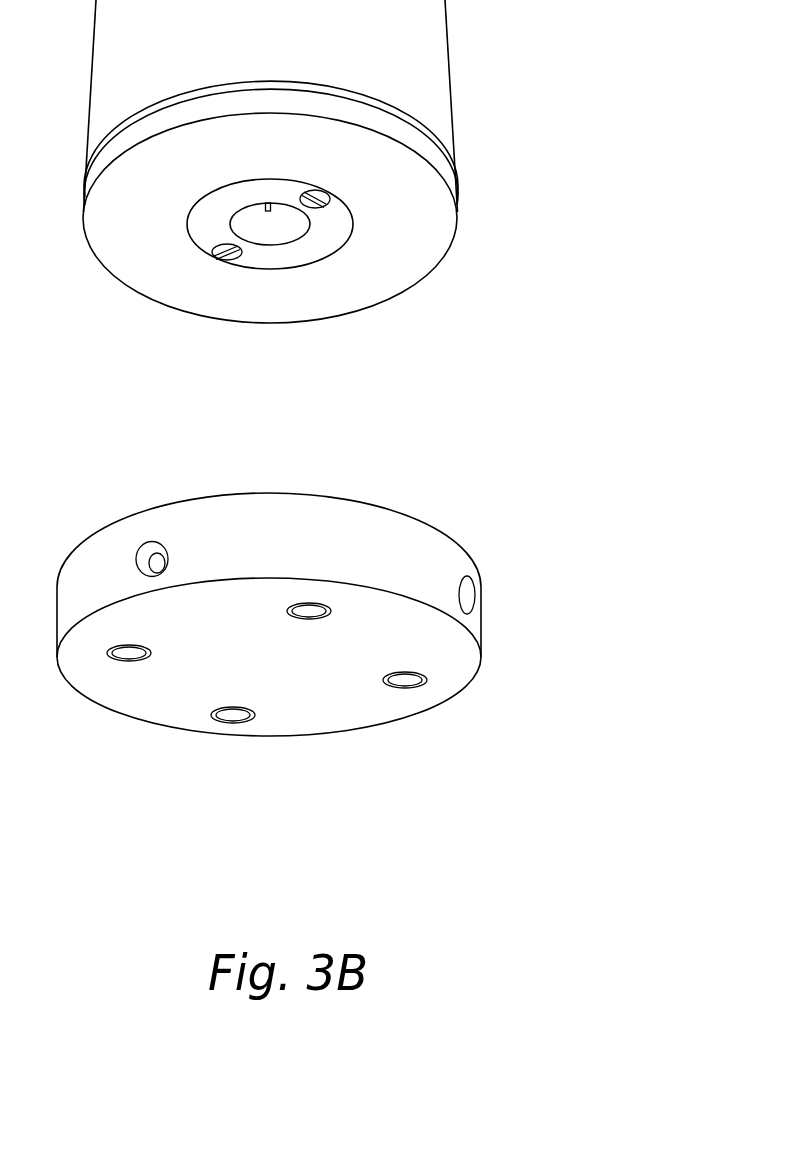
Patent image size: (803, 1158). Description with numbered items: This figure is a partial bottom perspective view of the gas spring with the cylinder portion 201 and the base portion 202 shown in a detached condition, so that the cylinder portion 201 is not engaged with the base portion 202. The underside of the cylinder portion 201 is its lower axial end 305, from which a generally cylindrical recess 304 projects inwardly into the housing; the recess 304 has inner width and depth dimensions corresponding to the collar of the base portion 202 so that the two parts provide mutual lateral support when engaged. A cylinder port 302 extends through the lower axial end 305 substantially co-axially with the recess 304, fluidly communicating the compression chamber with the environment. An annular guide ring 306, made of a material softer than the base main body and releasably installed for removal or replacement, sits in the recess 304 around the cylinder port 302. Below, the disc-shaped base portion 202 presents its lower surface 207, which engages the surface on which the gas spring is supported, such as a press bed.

The cylinder portion 201 is at (385, 184).
The base portion 202 is at (345, 589).
The lower surface 207 is at (290, 672).
The cylinder port 302 is at (268, 211).
The generally cylindrical recess 304 is at (259, 232).
The lower axial end 305 is at (430, 238).
The annular guide ring 306 is at (333, 233).